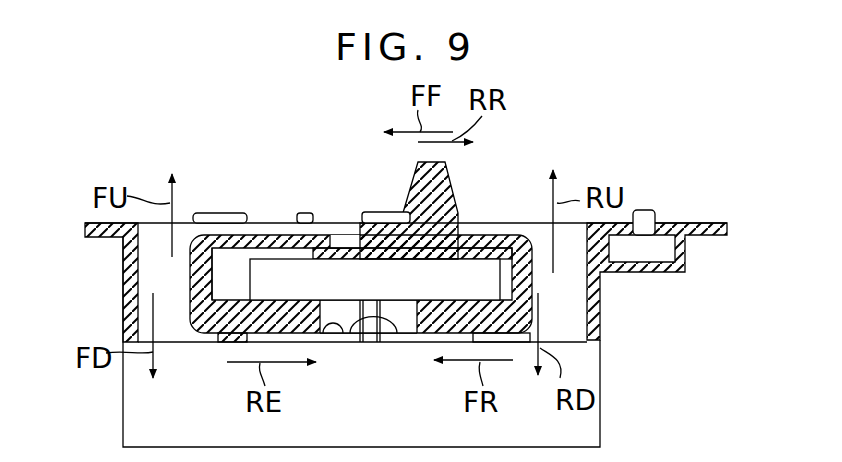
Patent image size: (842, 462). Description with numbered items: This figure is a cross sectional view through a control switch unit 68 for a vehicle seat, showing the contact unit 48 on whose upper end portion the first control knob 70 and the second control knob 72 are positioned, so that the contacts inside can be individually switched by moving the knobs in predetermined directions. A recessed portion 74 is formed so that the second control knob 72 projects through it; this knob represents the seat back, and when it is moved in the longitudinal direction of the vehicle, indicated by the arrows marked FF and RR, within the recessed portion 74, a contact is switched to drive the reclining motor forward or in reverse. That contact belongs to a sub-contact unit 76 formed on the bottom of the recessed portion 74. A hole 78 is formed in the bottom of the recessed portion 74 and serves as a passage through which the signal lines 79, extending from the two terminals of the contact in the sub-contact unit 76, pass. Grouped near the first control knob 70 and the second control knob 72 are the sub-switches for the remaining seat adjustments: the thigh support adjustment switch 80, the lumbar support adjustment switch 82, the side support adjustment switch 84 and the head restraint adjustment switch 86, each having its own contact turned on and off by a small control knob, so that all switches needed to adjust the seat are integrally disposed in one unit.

The contact unit 48 is at (138, 436).
The control switch unit 68 is at (112, 118).
The first control knob 70 is at (257, 235).
The second control knob 72 is at (458, 172).
The recessed portion 74 is at (329, 258).
The sub-contact unit 76 is at (265, 277).
The hole 78 is at (342, 322).
The signal lines 79 is at (350, 320).
The thigh support adjustment switch 80 is at (218, 212).
The lumbar support adjustment switch 82 is at (304, 212).
The side support adjustment switch 84 is at (366, 212).
The head restraint adjustment switch 86 is at (645, 210).